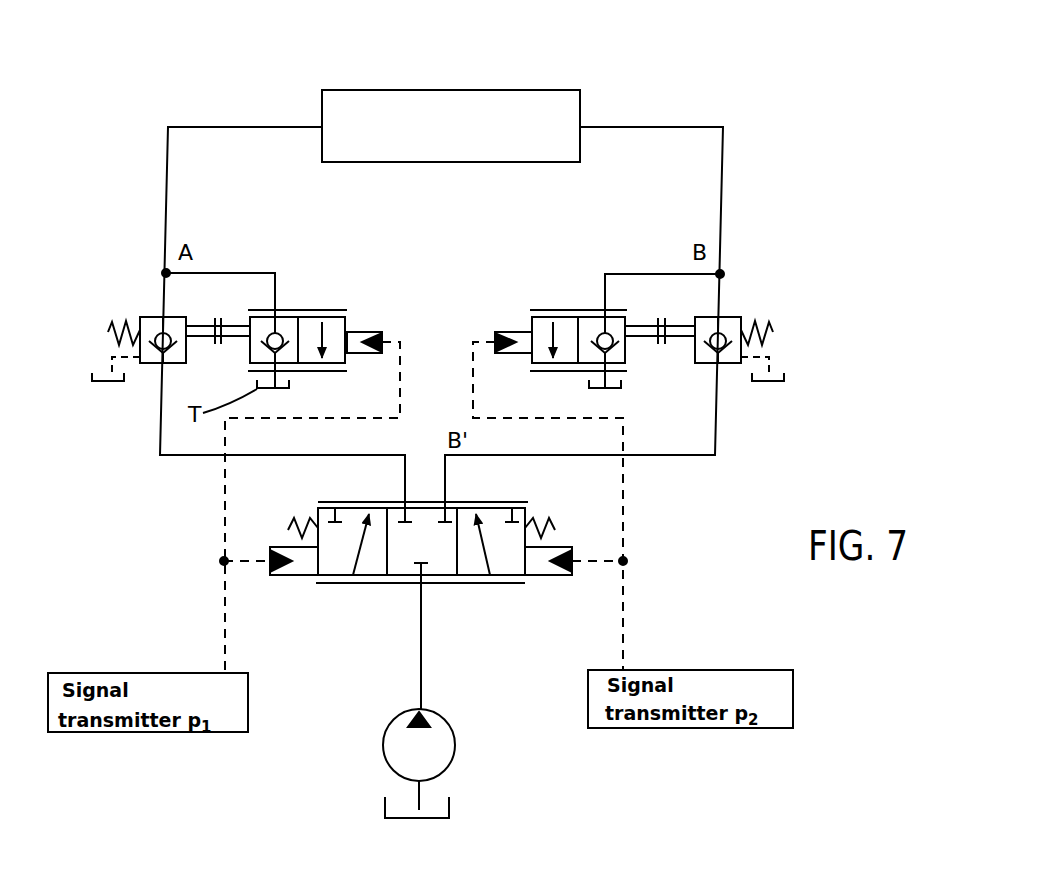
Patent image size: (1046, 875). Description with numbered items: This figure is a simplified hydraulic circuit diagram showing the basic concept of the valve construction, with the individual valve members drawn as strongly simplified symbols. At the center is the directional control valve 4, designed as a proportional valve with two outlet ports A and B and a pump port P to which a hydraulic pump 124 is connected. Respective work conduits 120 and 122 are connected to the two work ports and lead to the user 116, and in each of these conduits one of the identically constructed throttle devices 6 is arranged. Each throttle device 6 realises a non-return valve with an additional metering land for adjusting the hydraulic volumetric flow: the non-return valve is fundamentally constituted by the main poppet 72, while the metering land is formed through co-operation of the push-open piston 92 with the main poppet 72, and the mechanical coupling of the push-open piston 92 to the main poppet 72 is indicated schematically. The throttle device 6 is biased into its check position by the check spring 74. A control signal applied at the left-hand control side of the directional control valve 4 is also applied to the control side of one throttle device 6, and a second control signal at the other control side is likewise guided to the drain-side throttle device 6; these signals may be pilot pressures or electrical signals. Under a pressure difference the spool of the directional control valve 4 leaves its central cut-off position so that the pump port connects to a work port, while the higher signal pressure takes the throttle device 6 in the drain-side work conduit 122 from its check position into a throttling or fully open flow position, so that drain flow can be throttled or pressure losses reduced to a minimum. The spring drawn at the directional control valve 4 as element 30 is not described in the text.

The user 116 is at (493, 89).
The work conduit 120 is at (166, 182).
The work conduit 122 is at (723, 170).
The check spring 74 is at (135, 323).
The main poppet 72 is at (143, 365).
The throttle device 6 is at (286, 304).
The push-open piston 92 is at (322, 308).
The return spring 30 is at (551, 521).
The directional control valve 4 is at (396, 597).
The hydraulic pump 124 is at (454, 746).